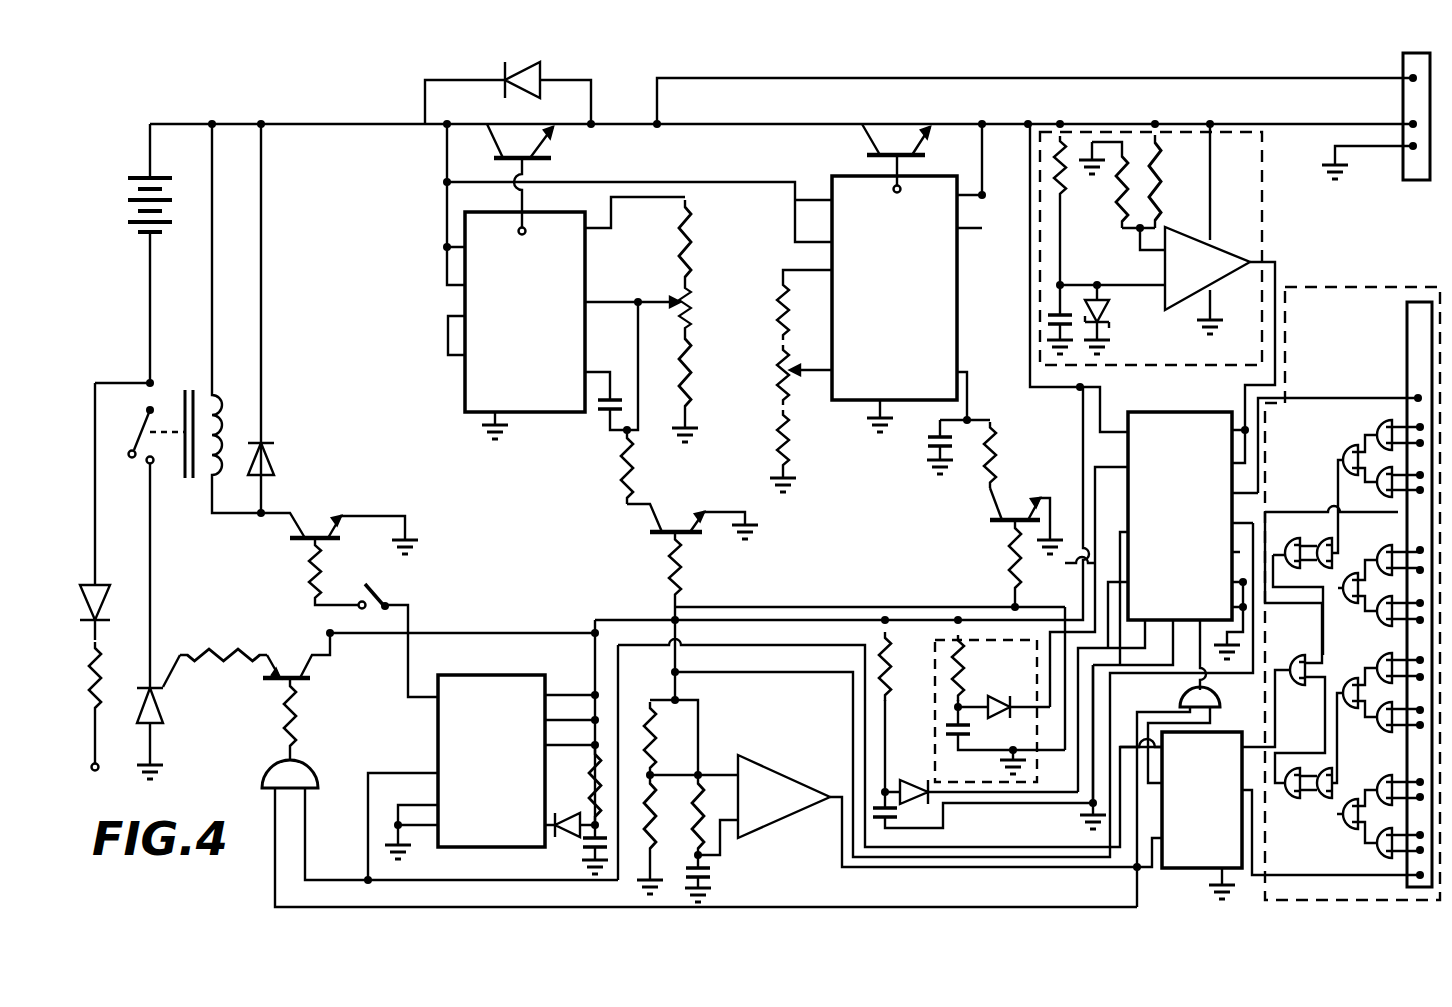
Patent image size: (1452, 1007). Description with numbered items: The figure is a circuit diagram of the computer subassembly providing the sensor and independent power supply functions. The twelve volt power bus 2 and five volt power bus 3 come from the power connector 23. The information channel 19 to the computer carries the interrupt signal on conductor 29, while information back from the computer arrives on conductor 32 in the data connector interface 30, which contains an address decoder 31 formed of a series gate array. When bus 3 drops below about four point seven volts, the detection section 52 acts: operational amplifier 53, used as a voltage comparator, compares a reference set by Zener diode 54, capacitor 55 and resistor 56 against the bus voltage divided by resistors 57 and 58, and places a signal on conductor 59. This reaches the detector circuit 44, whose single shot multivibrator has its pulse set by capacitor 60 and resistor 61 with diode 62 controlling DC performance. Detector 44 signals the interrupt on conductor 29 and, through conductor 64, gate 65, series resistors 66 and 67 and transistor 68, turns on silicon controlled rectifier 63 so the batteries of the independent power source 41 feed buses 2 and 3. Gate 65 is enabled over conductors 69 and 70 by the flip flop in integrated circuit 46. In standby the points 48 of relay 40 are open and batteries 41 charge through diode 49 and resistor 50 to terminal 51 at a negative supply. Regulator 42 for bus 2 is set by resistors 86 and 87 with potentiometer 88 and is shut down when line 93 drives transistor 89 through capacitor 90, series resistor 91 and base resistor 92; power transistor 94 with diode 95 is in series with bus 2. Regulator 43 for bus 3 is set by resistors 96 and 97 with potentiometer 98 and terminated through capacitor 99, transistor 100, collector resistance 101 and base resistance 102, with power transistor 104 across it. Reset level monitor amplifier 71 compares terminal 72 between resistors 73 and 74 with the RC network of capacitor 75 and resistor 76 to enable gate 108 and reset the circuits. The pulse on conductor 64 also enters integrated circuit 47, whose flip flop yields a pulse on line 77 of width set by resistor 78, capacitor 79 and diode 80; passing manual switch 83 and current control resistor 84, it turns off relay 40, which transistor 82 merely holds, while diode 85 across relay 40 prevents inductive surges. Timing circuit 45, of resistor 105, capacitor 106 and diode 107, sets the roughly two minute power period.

The twelve volt power bus 2 is at (1213, 85).
The five volt power bus 3 is at (1270, 124).
The information channel 19 is at (1405, 320).
The power connector 23 is at (1407, 65).
The conductor 29 is at (1297, 400).
The data connector interface 30 is at (1350, 284).
The address decoder 31 is at (1315, 823).
The conductor 32 is at (1315, 877).
The relay 40 is at (173, 408).
The independent power source 41 is at (120, 203).
The regulator element 42 is at (465, 392).
The five volt regulator element 43 is at (870, 426).
The detector circuit 44 is at (1150, 413).
The timing circuit 45 is at (932, 682).
The integrated circuit 46 is at (1192, 880).
The integrated circuit 47 is at (468, 675).
The points 48 is at (144, 418).
The diode 49 is at (78, 603).
The resistor 50 is at (87, 680).
The terminal 51 is at (92, 760).
The section 52 is at (1262, 237).
The operational amplifier 53 is at (1210, 234).
The Zener diode 54 is at (1111, 313).
The capacitor 55 is at (1067, 303).
The resistor 56 is at (1050, 123).
The resistor 57 is at (1160, 188).
The resistor 58 is at (1110, 186).
The conductor 59 is at (1278, 276).
The capacitor 60 is at (922, 824).
The resistor 61 is at (868, 671).
The diode 62 is at (905, 780).
The silicon controlled rectifier 63 is at (168, 702).
The conductor 64 is at (746, 643).
The gate 65 is at (307, 762).
The resistor 66 is at (300, 705).
The resistor 67 is at (232, 646).
The transistor 68 is at (286, 656).
The conductor 69 is at (957, 880).
The conductor 70 is at (832, 907).
The reset level monitor amplifier 71 is at (778, 776).
The terminal 72 is at (672, 682).
The resistor 73 is at (653, 748).
The resistor 74 is at (656, 820).
The capacitor 75 is at (712, 878).
The resistor 76 is at (720, 836).
The line 77 is at (404, 673).
The resistor 78 is at (586, 787).
The capacitor 79 is at (580, 872).
The diode 80 is at (565, 840).
The transistor 82 is at (316, 530).
The manual switch 83 is at (384, 588).
The current control resistor 84 is at (308, 572).
The diode 85 is at (276, 444).
The resistor 86 is at (688, 372).
The resistor 87 is at (695, 225).
The potentiometer 88 is at (692, 303).
The transistor 89 is at (680, 522).
The capacitor 90 is at (605, 414).
The series resistor 91 is at (621, 476).
The base resistor 92 is at (672, 578).
The line 93 is at (890, 607).
The power transistor 94 is at (517, 135).
The diode 95 is at (530, 70).
The resistor 96 is at (776, 445).
The resistor 97 is at (781, 310).
The potentiometer 98 is at (776, 387).
The capacitor 99 is at (929, 456).
The transistor 100 is at (1014, 505).
The collector series resistance 101 is at (996, 456).
The base series resistance 102 is at (1004, 567).
The power transistor 104 is at (893, 148).
The resistor 105 is at (966, 664).
The capacitor 106 is at (972, 732).
The diode 107 is at (982, 696).
The gate 108 is at (1180, 705).